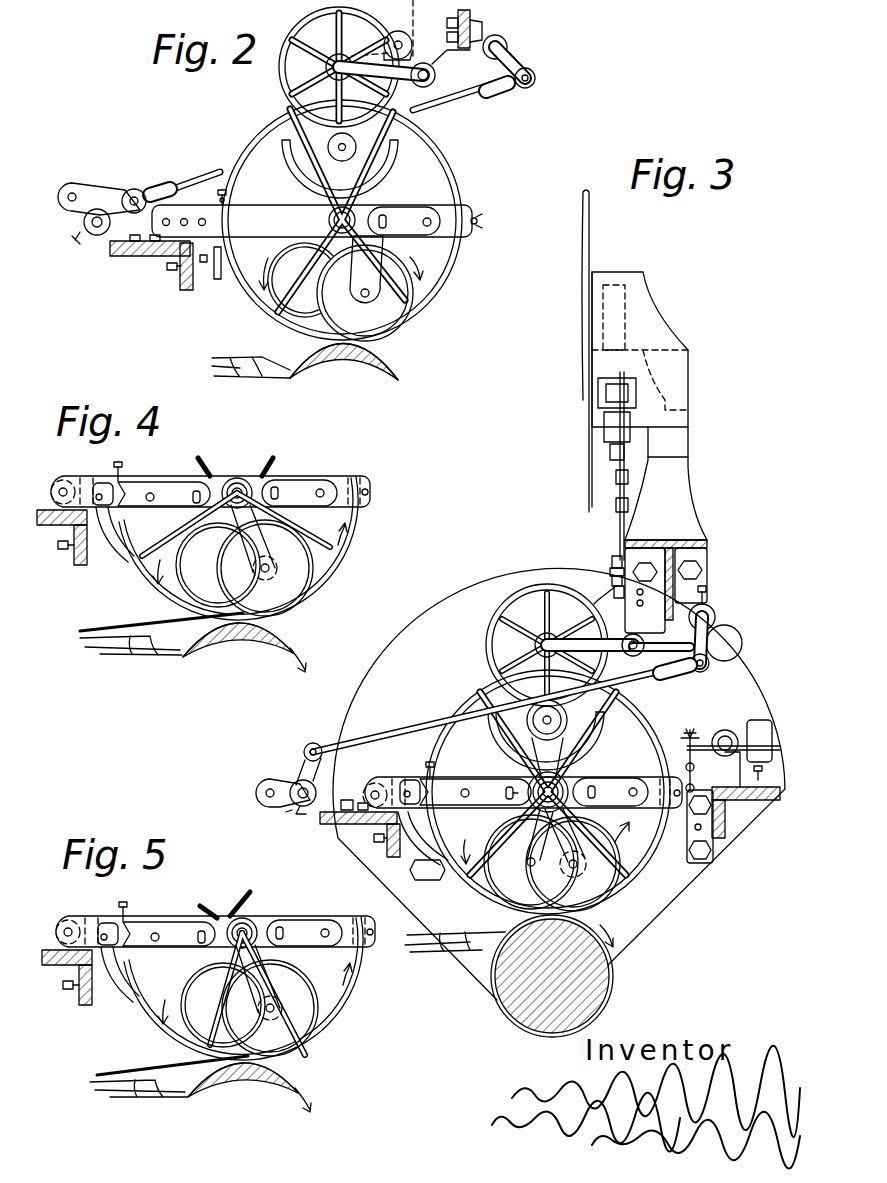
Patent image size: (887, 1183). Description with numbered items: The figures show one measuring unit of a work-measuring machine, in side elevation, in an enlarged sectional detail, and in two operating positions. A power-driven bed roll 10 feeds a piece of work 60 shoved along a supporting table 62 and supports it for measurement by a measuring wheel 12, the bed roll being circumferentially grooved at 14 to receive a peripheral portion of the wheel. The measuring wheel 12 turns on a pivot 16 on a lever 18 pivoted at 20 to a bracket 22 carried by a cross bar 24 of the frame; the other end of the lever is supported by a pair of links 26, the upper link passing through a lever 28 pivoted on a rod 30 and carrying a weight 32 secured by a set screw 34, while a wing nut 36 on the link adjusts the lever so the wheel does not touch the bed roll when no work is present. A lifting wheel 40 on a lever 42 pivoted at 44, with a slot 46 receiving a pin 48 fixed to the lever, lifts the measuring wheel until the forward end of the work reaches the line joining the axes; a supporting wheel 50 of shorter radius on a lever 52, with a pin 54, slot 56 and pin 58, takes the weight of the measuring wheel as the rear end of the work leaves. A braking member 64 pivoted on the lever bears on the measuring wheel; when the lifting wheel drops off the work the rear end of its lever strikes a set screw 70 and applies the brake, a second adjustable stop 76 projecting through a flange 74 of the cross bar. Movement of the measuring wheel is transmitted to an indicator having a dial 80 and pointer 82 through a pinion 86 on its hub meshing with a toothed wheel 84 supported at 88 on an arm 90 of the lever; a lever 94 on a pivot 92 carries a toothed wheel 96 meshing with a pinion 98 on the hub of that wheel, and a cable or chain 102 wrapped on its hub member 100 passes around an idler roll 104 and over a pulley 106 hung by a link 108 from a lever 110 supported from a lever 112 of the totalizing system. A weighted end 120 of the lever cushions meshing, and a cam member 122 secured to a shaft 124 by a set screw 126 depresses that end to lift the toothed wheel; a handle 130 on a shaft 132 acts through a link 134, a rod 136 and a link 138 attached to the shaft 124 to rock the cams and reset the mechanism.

In FIG. 2, the bed roll 10 is at (381, 372).
In FIG. 4, the bed roll 10 is at (208, 653).
In FIG. 5, the bed roll 10 is at (243, 1102).
In FIG. 3, the bed roll 10 is at (600, 991).
In FIG. 2, the measuring wheel 12 is at (459, 192).
In FIG. 4, the measuring wheel 12 is at (352, 534).
In FIG. 5, the measuring wheel 12 is at (261, 988).
In FIG. 3, the measuring wheel 12 is at (633, 709).
In FIG. 2, the groove 14 is at (400, 379).
In FIG. 4, the groove 14 is at (277, 653).
In FIG. 3, the groove 14 is at (605, 1012).
In FIG. 3, the pivot 16 is at (563, 786).
In FIG. 2, the lever 18 is at (258, 217).
In FIG. 4, the lever 18 is at (258, 476).
In FIG. 5, the lever 18 is at (215, 916).
In FIG. 3, the lever 18 is at (440, 776).
In FIG. 4, the pivot 20 is at (63, 488).
In FIG. 5, the pivot 20 is at (62, 921).
In FIG. 3, the pivot 20 is at (375, 790).
In FIG. 3, the bracket 22 is at (346, 800).
In FIG. 3, the cross bar 24 is at (365, 825).
In FIG. 3, the links 26 is at (692, 742).
In FIG. 3, the lever 28 is at (730, 731).
In FIG. 3, the rod 30 is at (730, 757).
In FIG. 3, the weight 32 is at (770, 729).
In FIG. 3, the set screw 34 is at (763, 771).
In FIG. 3, the wing nut 36 is at (686, 735).
In FIG. 2, the lifting wheel 40 is at (278, 308).
In FIG. 4, the lifting wheel 40 is at (178, 580).
In FIG. 5, the lifting wheel 40 is at (199, 1007).
In FIG. 3, the lifting wheel 40 is at (510, 903).
In FIG. 4, the lever 42 is at (163, 484).
In FIG. 5, the lever 42 is at (169, 918).
In FIG. 3, the lever 42 is at (468, 782).
In FIG. 3, the pivot 44 is at (417, 806).
In FIG. 3, the slot 46 is at (506, 788).
In FIG. 4, the pin 48 is at (192, 497).
In FIG. 5, the pin 48 is at (185, 937).
In FIG. 3, the pin 48 is at (506, 794).
In FIG. 2, the supporting wheel 50 is at (405, 327).
In FIG. 4, the supporting wheel 50 is at (300, 605).
In FIG. 5, the supporting wheel 50 is at (285, 1011).
In FIG. 3, the supporting wheel 50 is at (616, 882).
In FIG. 2, the lever 52 is at (412, 214).
In FIG. 4, the lever 52 is at (298, 482).
In FIG. 5, the lever 52 is at (306, 916).
In FIG. 3, the lever 52 is at (630, 807).
In FIG. 4, the pin 54 is at (279, 497).
In FIG. 5, the pin 54 is at (294, 937).
In FIG. 3, the pin 54 is at (599, 794).
In FIG. 3, the slot 56 is at (596, 786).
In FIG. 3, the pin 58 is at (606, 818).
In FIG. 4, the piece of work 60 is at (123, 626).
In FIG. 5, the piece of work 60 is at (171, 1058).
In FIG. 4, the supporting table 62 is at (125, 651).
In FIG. 5, the supporting table 62 is at (138, 1106).
In FIG. 3, the supporting table 62 is at (440, 951).
In FIG. 2, the braking member 64 is at (218, 281).
In FIG. 4, the braking member 64 is at (116, 549).
In FIG. 5, the braking member 64 is at (118, 976).
In FIG. 3, the braking member 64 is at (432, 860).
In FIG. 2, the set screw 70 is at (215, 195).
In FIG. 4, the set screw 70 is at (119, 464).
In FIG. 5, the set screw 70 is at (117, 902).
In FIG. 3, the set screw 70 is at (426, 763).
In FIG. 2, the flange 74 is at (182, 282).
In FIG. 4, the flange 74 is at (69, 531).
In FIG. 5, the flange 74 is at (67, 1007).
In FIG. 3, the flange 74 is at (392, 857).
In FIG. 2, the adjustable stop 76 is at (165, 267).
In FIG. 4, the adjustable stop 76 is at (62, 553).
In FIG. 5, the adjustable stop 76 is at (58, 999).
In FIG. 3, the adjustable stop 76 is at (368, 836).
In FIG. 3, the dial 80 is at (591, 240).
In FIG. 3, the pointer 82 is at (581, 254).
In FIG. 2, the toothed wheel 84 is at (300, 168).
In FIG. 3, the toothed wheel 84 is at (500, 730).
In FIG. 3, the pinion 86 is at (548, 779).
In FIG. 3, the rotatable support 88 is at (566, 715).
In FIG. 3, the arm 90 is at (580, 742).
In FIG. 3, the pivot 92 is at (637, 652).
In FIG. 2, the lever 94 is at (407, 80).
In FIG. 3, the lever 94 is at (618, 652).
In FIG. 2, the toothed wheel 96 is at (296, 22).
In FIG. 3, the toothed wheel 96 is at (490, 639).
In FIG. 2, the pinion 98 is at (334, 143).
In FIG. 3, the pinion 98 is at (503, 732).
In FIG. 3, the hub member 100 is at (534, 649).
In FIG. 3, the cable or chain 102 is at (614, 590).
In FIG. 3, the idler roll 104 is at (597, 601).
In FIG. 3, the pulley 106 is at (614, 578).
In FIG. 3, the link 108 is at (612, 570).
In FIG. 3, the lever 110 is at (614, 558).
In FIG. 3, the lever 112 is at (627, 519).
In FIG. 3, the weighted end 120 is at (735, 640).
In FIG. 2, the cam member 122 is at (487, 95).
In FIG. 3, the cam member 122 is at (703, 577).
In FIG. 3, the shaft 124 is at (716, 614).
In FIG. 3, the set screw 126 is at (707, 596).
In FIG. 2, the handle 130 is at (78, 190).
In FIG. 3, the handle 130 is at (258, 787).
In FIG. 3, the shaft 132 is at (295, 804).
In FIG. 3, the link 134 is at (303, 771).
In FIG. 2, the rod 136 is at (447, 104).
In FIG. 3, the rod 136 is at (380, 737).
In FIG. 2, the link 138 is at (515, 62).
In FIG. 3, the link 138 is at (712, 660).